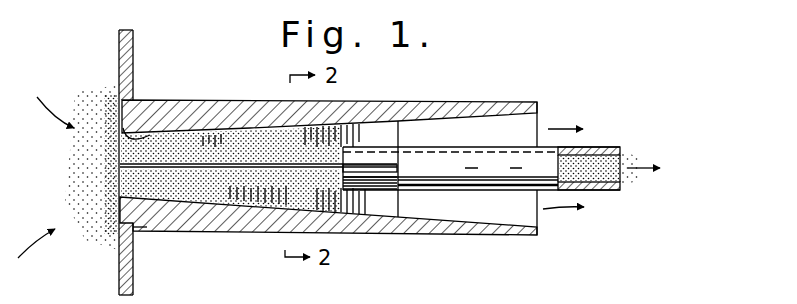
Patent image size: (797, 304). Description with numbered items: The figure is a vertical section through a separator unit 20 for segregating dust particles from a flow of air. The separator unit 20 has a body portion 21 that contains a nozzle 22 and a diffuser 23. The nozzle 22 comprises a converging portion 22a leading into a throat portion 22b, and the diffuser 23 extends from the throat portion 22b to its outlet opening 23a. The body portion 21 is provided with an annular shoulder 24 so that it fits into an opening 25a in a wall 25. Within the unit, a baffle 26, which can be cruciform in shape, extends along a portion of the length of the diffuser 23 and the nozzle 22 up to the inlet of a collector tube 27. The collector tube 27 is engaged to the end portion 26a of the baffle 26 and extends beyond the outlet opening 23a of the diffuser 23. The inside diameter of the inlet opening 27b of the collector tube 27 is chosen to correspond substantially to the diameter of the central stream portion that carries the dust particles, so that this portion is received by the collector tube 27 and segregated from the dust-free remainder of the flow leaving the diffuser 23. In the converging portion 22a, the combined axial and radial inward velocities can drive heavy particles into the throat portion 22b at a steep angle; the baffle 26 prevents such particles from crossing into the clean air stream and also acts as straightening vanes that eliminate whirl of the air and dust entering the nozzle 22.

The separator unit 20 is at (209, 92).
The body portion 21 is at (384, 116).
The nozzle 22 is at (112, 152).
The converging portion 22a is at (119, 196).
The throat portion 22b is at (138, 137).
The diffuser 23 is at (301, 132).
The outlet opening 23a is at (540, 118).
The annular shoulder 24 is at (137, 230).
The wall 25 is at (117, 277).
The opening 25a is at (118, 218).
The baffle 26 is at (217, 168).
The end portion 26a is at (386, 168).
The collector tube 27 is at (491, 168).
The inlet opening 27b is at (348, 180).